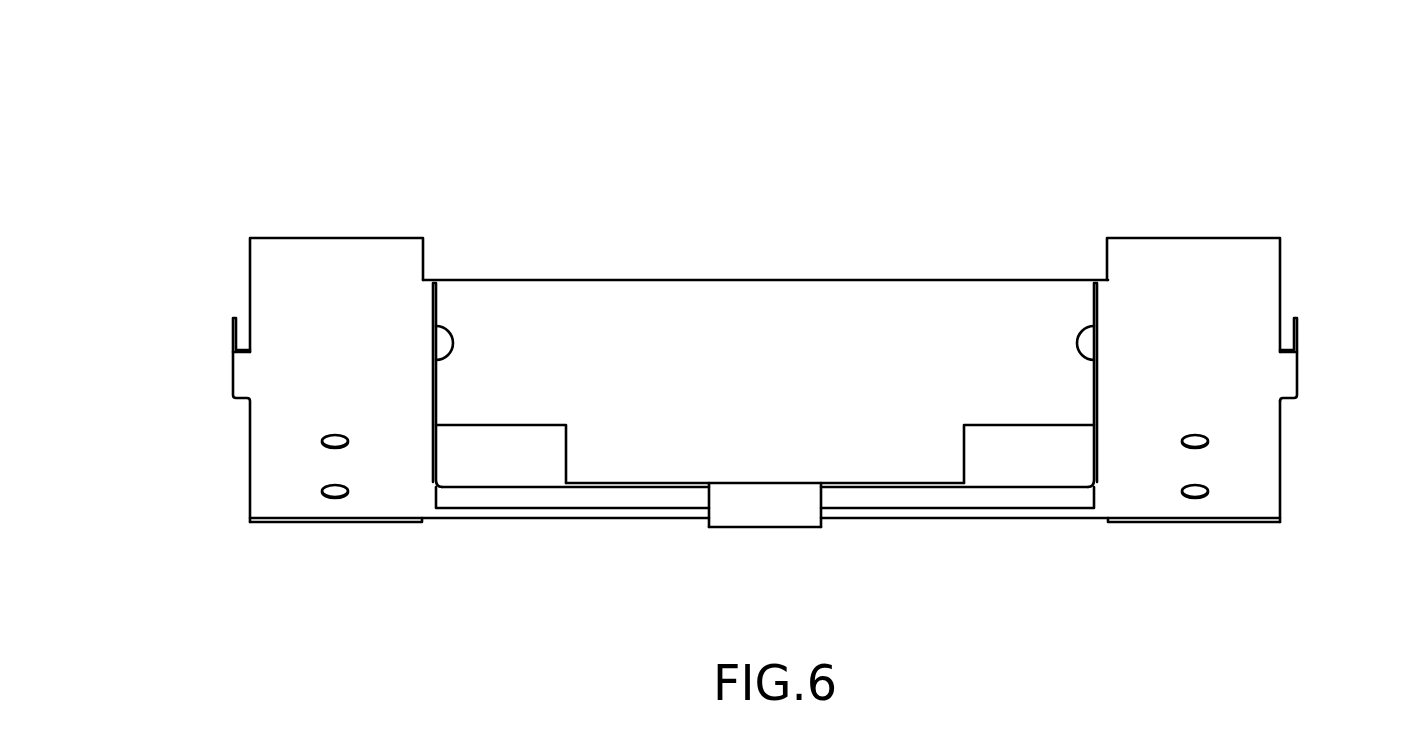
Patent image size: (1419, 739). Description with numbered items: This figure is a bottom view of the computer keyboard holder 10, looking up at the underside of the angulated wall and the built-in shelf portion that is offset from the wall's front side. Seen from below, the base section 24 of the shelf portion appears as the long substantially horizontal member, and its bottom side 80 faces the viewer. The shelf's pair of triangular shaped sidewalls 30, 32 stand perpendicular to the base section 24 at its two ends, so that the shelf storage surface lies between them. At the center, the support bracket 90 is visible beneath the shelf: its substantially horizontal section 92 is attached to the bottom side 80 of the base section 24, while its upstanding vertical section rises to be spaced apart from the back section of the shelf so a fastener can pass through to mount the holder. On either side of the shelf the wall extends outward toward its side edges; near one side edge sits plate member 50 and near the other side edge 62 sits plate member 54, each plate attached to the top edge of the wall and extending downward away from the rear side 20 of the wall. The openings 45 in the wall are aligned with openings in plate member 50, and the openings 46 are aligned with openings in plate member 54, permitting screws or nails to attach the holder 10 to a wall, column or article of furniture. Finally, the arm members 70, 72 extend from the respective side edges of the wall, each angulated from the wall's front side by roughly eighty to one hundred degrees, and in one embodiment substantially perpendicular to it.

The computer keyboard holder 10 is at (506, 136).
The rear side 20 is at (270, 263).
The base section 24 is at (674, 307).
The triangular shaped sidewall 30 is at (433, 383).
The triangular shaped sidewall 32 is at (1098, 383).
The opening 45 is at (348, 441).
The opening 46 is at (1182, 441).
The plate member 50 is at (350, 520).
The plate member 54 is at (1197, 520).
The side edge 62 is at (1282, 455).
The arm member 70 is at (233, 362).
The arm member 72 is at (1298, 365).
The bottom side 80 is at (921, 307).
The support bracket 90 is at (735, 512).
The substantially horizontal section 92 is at (795, 512).